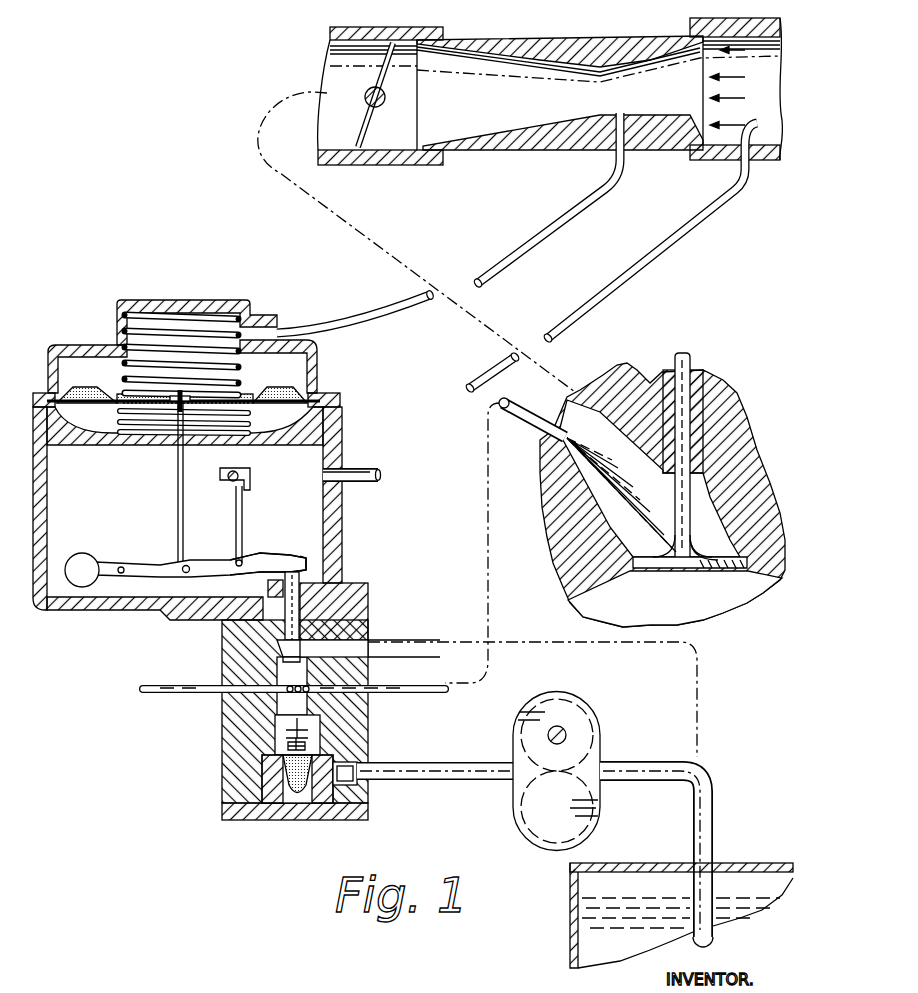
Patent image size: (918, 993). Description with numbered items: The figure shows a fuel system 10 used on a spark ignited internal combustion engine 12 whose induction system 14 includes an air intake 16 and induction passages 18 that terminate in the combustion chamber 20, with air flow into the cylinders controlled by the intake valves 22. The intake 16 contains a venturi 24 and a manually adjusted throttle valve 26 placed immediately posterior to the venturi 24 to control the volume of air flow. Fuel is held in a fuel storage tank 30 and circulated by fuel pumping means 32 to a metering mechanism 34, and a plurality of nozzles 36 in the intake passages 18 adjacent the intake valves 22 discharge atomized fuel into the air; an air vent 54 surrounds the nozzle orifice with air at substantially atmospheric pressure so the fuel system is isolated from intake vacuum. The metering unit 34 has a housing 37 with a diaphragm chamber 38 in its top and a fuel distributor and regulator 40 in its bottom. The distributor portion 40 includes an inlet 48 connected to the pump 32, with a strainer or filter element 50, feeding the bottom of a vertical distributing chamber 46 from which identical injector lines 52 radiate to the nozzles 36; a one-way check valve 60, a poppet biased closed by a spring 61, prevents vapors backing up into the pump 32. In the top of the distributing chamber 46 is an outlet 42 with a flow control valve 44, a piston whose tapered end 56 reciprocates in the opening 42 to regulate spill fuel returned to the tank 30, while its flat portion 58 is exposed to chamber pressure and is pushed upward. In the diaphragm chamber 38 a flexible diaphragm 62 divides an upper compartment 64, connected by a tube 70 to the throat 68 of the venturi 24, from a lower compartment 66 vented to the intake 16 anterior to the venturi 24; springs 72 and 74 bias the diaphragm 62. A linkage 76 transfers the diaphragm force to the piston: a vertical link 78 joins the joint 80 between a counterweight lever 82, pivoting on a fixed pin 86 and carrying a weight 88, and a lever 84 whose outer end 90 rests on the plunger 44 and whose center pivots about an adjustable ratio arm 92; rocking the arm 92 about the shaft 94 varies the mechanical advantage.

The fuel system 10 is at (192, 299).
The internal combustion engine 12 is at (747, 607).
The induction system 14 is at (329, 37).
The air intake 16 is at (590, 34).
The induction passages 18 is at (632, 398).
The combustion chamber 20 is at (587, 600).
The intake valves 22 is at (687, 562).
The venturi 24 is at (545, 42).
The throttle valve 26 is at (363, 126).
The fuel storage tank 30 is at (737, 860).
The fuel pumping means 32 is at (598, 733).
The metering mechanism 34 is at (110, 610).
The nozzles 36 is at (533, 405).
The housing 37 is at (335, 523).
The diaphragm chamber 38 is at (51, 357).
The fuel distributor and regulator 40 is at (222, 713).
The outlet 42 is at (348, 643).
The flow control valve 44 is at (320, 585).
The distributing chamber 46 is at (282, 672).
The inlet 48 is at (348, 763).
The strainer or filter element 50 is at (288, 805).
The injector lines 52 is at (188, 686).
The air vent 54 is at (556, 410).
The tapered end 56 is at (305, 641).
The flat portion 58 is at (308, 662).
The one-way check valve 60 is at (305, 722).
The spring 61 is at (288, 738).
The flexible diaphragm 62 is at (320, 393).
The upper compartment 64 is at (313, 360).
The lower compartment 66 is at (185, 443).
The throat 68 is at (647, 58).
The tube 70 is at (472, 275).
The spring 72 is at (122, 327).
The spring 74 is at (255, 421).
The linkage 76 is at (179, 493).
The vertical link 78 is at (179, 463).
The joint 80 is at (190, 564).
The counterweight lever 82 is at (155, 565).
The lever 84 is at (267, 563).
The fixed pin 86 is at (122, 566).
The weight 88 is at (92, 528).
The outer end 90 is at (310, 557).
The adjustable ratio arm 92 is at (243, 523).
The shaft 94 is at (226, 482).